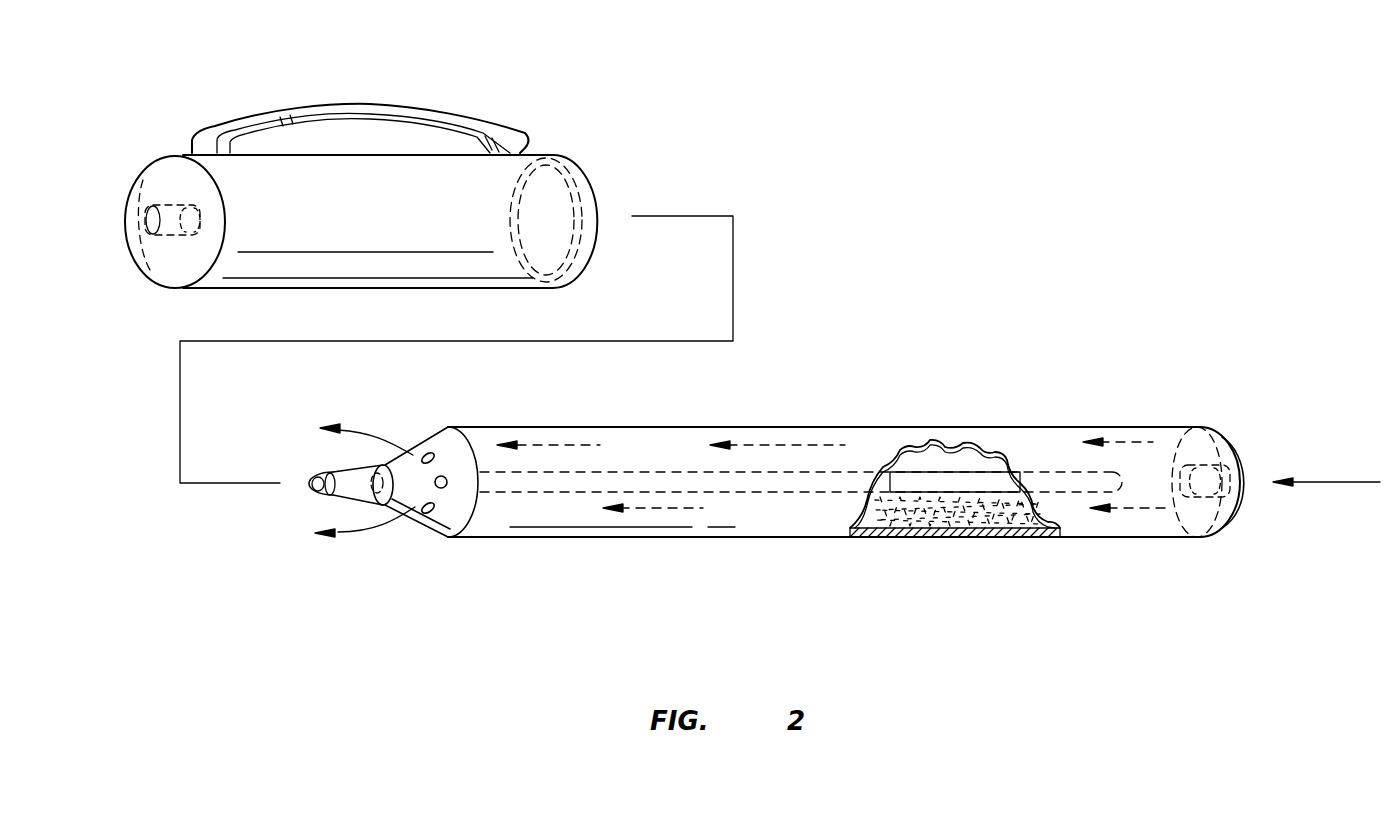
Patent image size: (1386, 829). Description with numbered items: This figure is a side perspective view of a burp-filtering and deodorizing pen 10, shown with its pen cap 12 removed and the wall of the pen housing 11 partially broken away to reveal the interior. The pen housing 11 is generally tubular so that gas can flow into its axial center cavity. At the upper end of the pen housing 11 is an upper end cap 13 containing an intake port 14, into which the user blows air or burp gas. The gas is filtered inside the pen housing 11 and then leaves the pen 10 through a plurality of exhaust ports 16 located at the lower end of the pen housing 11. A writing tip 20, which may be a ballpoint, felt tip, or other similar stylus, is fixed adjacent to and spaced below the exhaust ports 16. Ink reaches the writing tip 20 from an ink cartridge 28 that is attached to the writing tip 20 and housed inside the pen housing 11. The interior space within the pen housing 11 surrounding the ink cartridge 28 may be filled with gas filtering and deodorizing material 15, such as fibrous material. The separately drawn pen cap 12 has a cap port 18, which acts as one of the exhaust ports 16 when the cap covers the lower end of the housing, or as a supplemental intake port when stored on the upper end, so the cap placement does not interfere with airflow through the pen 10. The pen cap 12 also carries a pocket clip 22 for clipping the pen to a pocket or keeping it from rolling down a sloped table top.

The burp-filtering and deodorizing pen 10 is at (862, 380).
The pen housing 11 is at (1123, 538).
The pen cap 12 is at (409, 161).
The upper end cap 13 is at (1243, 513).
The intake port 14 is at (1222, 465).
The gas filtering and deodorizing material 15 is at (862, 513).
The exhaust ports 16 is at (448, 485).
The cap port 18 is at (148, 215).
The writing tip 20 is at (433, 493).
The pocket clip 22 is at (407, 110).
The ink cartridge 28 is at (1047, 473).